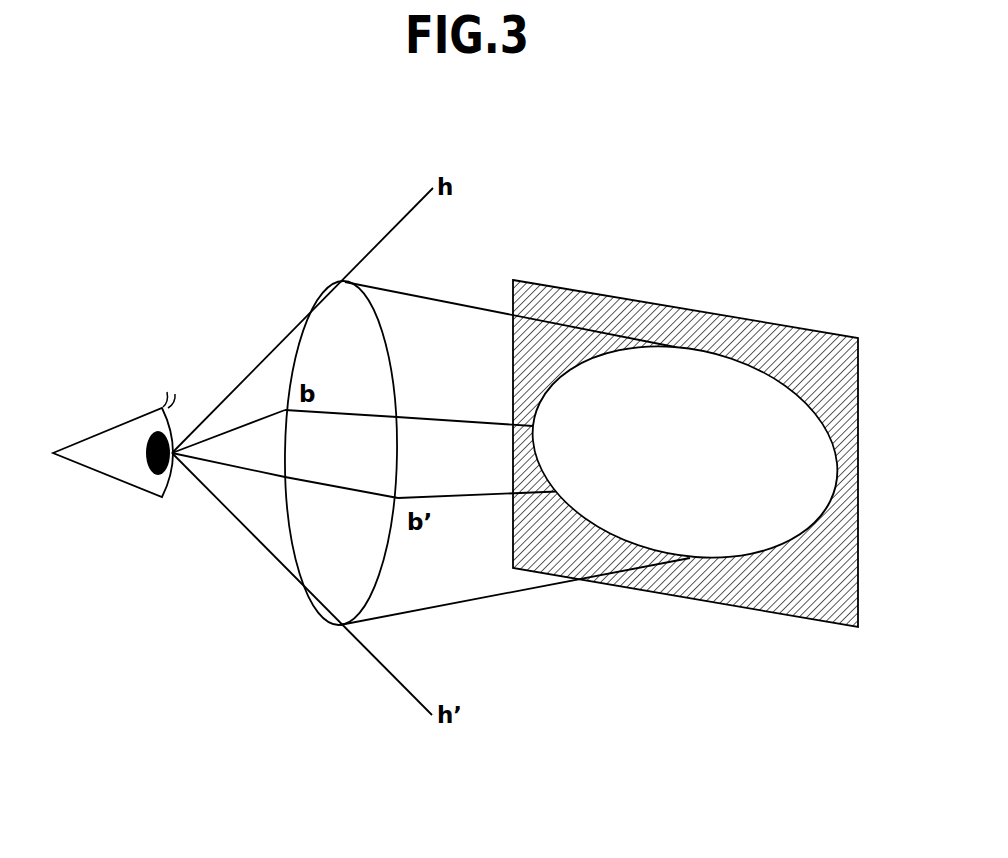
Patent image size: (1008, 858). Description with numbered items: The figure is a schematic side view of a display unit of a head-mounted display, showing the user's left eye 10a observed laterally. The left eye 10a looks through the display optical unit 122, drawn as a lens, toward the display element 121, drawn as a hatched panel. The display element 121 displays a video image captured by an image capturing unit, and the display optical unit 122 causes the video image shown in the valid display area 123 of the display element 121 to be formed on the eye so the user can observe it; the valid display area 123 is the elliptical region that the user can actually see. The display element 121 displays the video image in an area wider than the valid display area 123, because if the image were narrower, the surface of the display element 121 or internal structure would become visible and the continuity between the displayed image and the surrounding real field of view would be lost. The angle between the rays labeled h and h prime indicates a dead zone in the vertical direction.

The left eye 10a is at (108, 430).
The display optical unit 122 is at (327, 285).
The display element 121 is at (697, 310).
The valid display area 123 is at (837, 338).